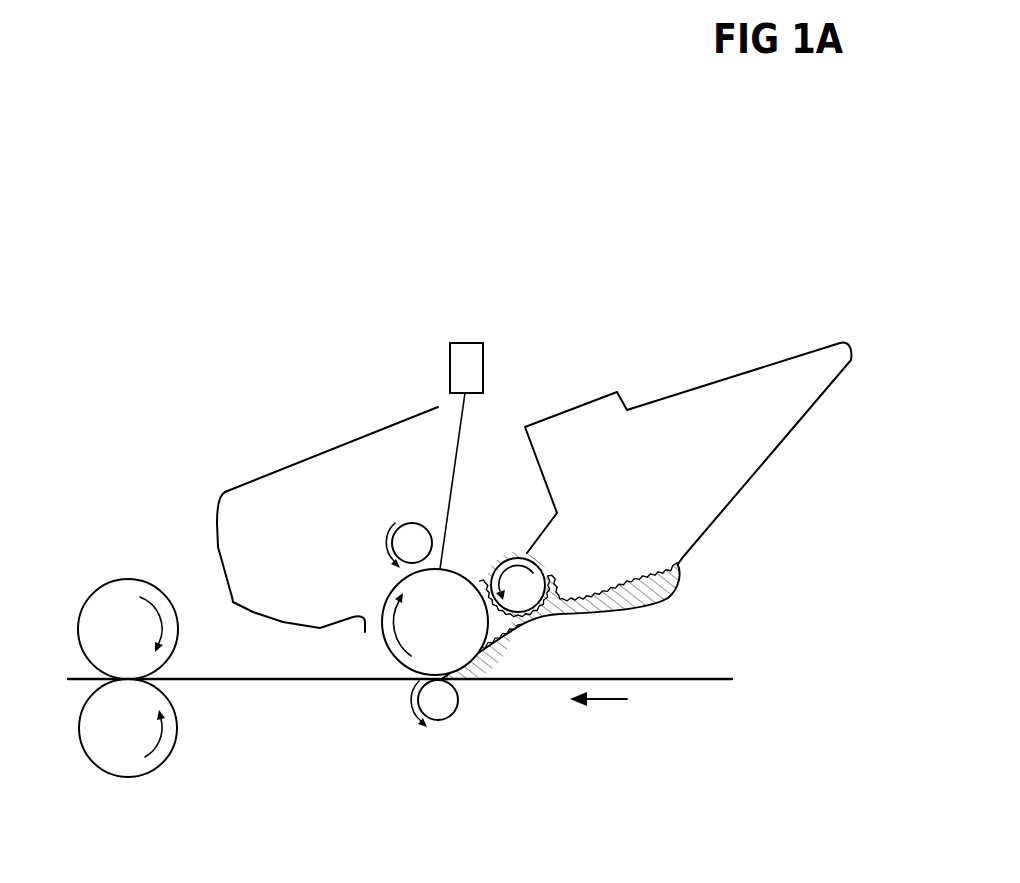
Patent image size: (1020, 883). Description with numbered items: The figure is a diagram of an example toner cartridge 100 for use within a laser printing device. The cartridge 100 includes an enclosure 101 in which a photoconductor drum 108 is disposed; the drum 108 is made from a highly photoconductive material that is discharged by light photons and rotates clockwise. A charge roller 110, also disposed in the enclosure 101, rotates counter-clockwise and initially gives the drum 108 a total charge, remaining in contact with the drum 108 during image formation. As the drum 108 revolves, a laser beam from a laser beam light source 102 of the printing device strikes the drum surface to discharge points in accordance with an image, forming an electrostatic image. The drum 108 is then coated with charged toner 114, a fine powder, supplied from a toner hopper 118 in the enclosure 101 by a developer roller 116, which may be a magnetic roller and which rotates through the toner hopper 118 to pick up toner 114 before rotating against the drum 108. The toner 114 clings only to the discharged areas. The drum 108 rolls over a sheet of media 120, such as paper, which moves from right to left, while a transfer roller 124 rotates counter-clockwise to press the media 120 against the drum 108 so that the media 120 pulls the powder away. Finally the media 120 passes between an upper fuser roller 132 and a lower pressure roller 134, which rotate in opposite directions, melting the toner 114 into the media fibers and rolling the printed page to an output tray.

The toner cartridge 100 is at (362, 373).
The enclosure 101 is at (318, 451).
The laser beam light source 102 is at (484, 364).
The photoconductor drum 108 is at (435, 622).
The charge roller 110 is at (413, 522).
The toner 114 is at (632, 581).
The developer roller 116 is at (545, 567).
The toner hopper 118 is at (748, 463).
The media 120 is at (665, 680).
The transfer roller 124 is at (448, 720).
The upper fuser roller 132 is at (115, 580).
The lower pressure roller 134 is at (133, 777).